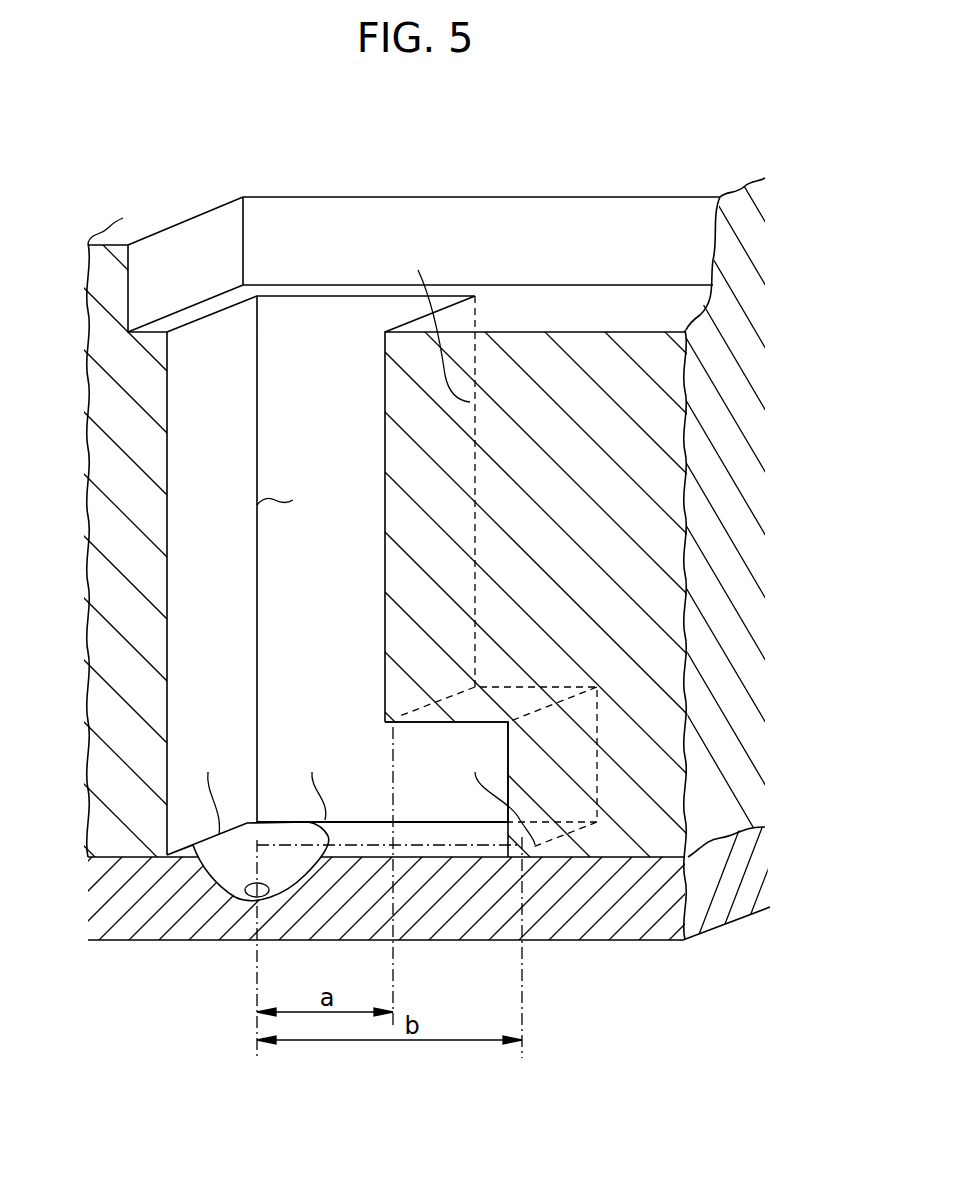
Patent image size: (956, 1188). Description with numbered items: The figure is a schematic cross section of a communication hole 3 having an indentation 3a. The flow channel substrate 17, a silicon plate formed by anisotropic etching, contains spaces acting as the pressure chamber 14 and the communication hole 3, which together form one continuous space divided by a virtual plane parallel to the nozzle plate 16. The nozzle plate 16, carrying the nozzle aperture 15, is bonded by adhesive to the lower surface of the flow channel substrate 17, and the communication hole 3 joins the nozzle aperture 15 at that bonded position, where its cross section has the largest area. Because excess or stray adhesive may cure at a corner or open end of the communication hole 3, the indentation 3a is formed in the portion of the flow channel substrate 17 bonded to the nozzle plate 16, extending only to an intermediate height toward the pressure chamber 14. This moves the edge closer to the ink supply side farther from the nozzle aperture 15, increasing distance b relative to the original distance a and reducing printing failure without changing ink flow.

The communication hole 3 is at (327, 347).
The indentation 3a is at (412, 756).
The pressure chamber 14 is at (637, 238).
The nozzle aperture 15 is at (285, 870).
The nozzle plate 16 is at (452, 930).
The flow channel substrate 17 is at (707, 180).